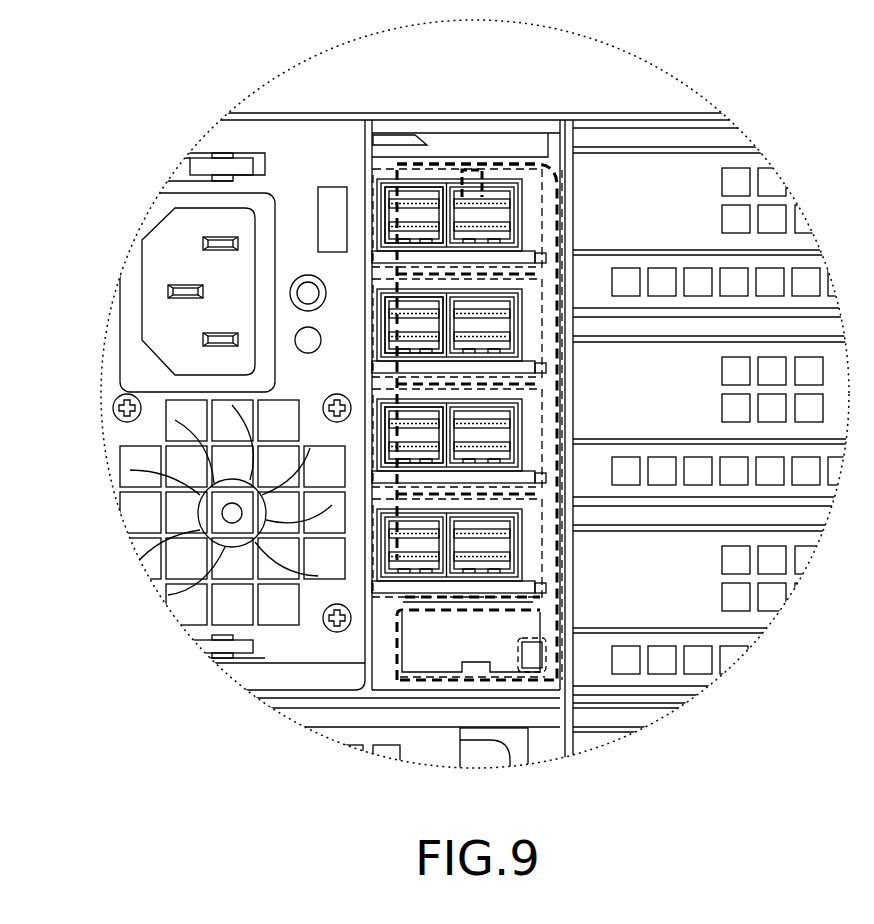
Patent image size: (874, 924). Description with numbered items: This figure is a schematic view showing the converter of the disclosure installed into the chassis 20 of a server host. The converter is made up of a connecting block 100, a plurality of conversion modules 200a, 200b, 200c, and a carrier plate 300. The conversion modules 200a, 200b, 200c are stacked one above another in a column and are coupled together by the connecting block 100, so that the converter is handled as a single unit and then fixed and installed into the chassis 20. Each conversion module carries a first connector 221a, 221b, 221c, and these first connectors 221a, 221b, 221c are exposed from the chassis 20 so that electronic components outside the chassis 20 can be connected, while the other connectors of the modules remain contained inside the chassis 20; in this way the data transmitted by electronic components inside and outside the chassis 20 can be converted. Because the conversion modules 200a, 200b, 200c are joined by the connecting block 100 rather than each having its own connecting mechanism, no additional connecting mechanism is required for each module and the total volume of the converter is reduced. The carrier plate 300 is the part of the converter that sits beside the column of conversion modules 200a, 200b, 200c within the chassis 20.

The chassis 20 is at (667, 113).
The connecting block 100 is at (362, 371).
The conversion module 200a is at (527, 212).
The conversion module 200b is at (527, 325).
The conversion module 200c is at (527, 435).
The first connector 221a is at (415, 215).
The first connector 221b is at (395, 322).
The first connector 221c is at (395, 432).
The carrier plate 300 is at (390, 128).